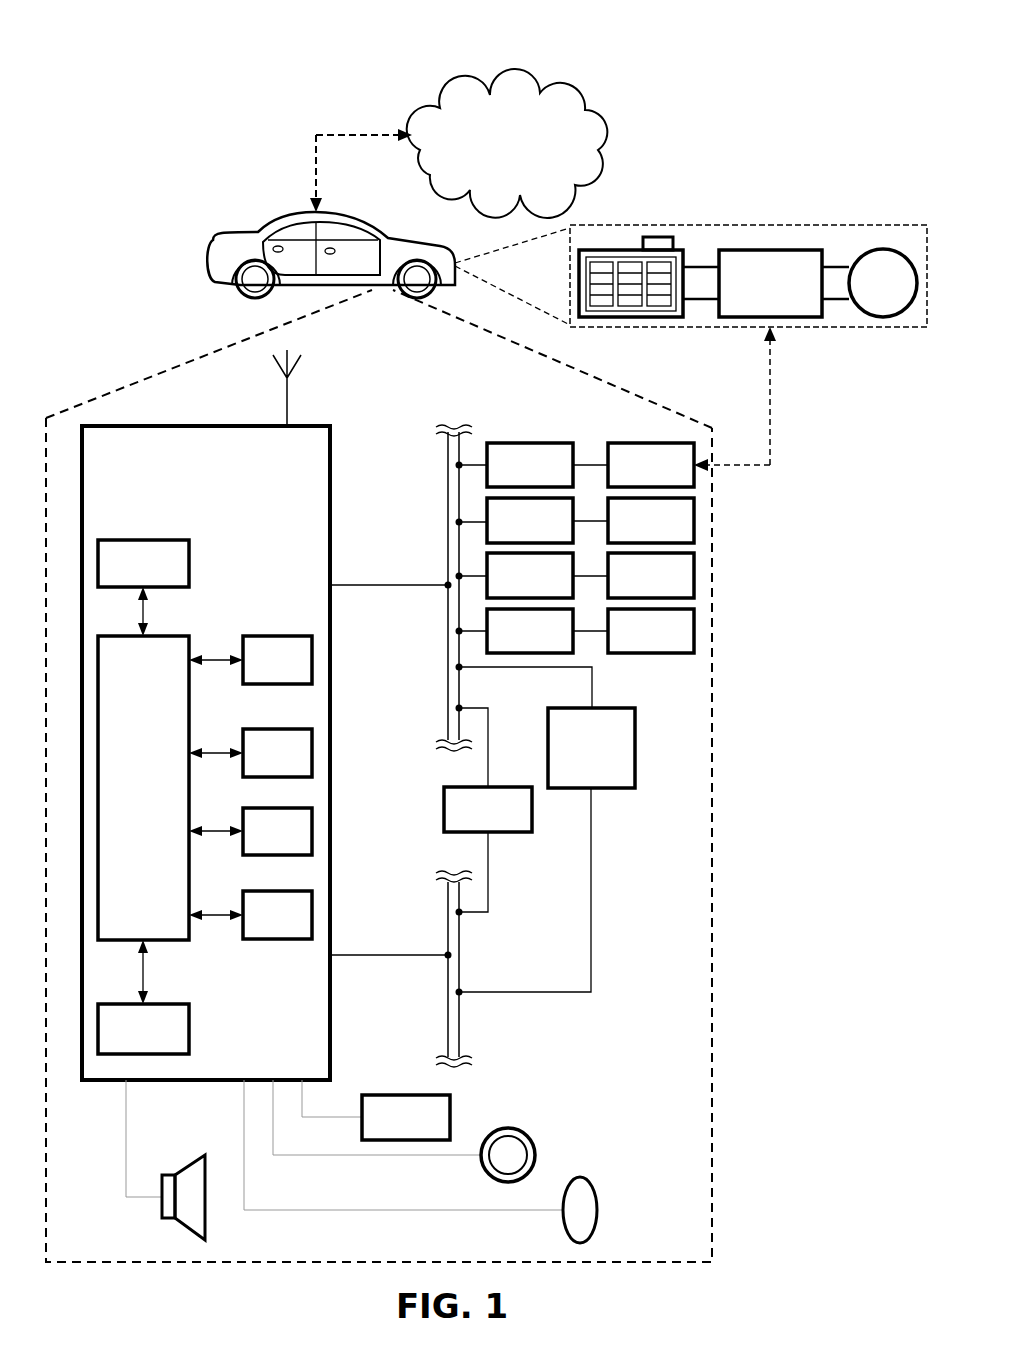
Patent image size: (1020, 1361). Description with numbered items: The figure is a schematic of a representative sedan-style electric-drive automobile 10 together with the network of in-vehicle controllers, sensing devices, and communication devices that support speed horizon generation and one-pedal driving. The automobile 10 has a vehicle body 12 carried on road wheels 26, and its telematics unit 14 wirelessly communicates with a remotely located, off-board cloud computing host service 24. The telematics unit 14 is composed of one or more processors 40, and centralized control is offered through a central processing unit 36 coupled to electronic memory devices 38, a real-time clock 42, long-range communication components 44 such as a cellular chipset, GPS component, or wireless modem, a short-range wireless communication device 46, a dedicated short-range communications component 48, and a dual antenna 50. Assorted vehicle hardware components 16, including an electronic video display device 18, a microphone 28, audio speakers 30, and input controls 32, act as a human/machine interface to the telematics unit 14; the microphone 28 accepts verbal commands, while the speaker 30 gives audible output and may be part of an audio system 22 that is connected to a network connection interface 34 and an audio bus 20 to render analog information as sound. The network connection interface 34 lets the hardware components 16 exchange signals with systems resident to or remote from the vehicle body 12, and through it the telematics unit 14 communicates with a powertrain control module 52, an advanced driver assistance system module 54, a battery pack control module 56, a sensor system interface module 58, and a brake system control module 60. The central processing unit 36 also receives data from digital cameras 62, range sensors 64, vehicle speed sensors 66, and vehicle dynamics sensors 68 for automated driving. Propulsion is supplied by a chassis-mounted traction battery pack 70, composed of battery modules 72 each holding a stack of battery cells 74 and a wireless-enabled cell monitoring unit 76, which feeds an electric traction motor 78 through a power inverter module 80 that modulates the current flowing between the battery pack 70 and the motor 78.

The automobile 10 is at (185, 49).
The vehicle body 12 is at (257, 232).
The telematics unit 14 is at (245, 753).
The vehicle hardware components 16 is at (192, 360).
The electronic video display device 18 is at (406, 1117).
The audio bus 20 is at (448, 1000).
The audio system 22 is at (591, 748).
The cloud computing host service 24 is at (507, 143).
The road wheels 26 is at (243, 289).
The microphone 28 is at (597, 1195).
The audio speaker 30 is at (190, 1225).
The input controls 32 is at (536, 1148).
The network connection interface 34 is at (448, 656).
The central processing unit 36 is at (143, 788).
The electronic memory devices 38 is at (143, 1029).
The processors 40 is at (143, 563).
The real-time clock 42 is at (277, 660).
The long-range communication components 44 is at (277, 753).
The short-range wireless communication device 46 is at (277, 831).
The dedicated short-range communications component 48 is at (277, 915).
The dual antenna 50 is at (290, 398).
The powertrain control module 52 is at (530, 465).
The advanced driver assistance system module 54 is at (651, 465).
The battery pack control module 56 is at (488, 809).
The sensor system interface module 58 is at (530, 520).
The brake system control module 60 is at (651, 520).
The digital cameras 62 is at (530, 575).
The range sensors 64 is at (651, 575).
The vehicle speed sensors 66 is at (530, 631).
The vehicle dynamics sensors 68 is at (651, 631).
The traction battery pack 70 is at (724, 268).
The battery module 72 is at (600, 258).
The battery cells 74 is at (583, 267).
The cell monitoring unit 76 is at (656, 237).
The electric traction motor 78 is at (874, 250).
The power inverter module 80 is at (733, 250).